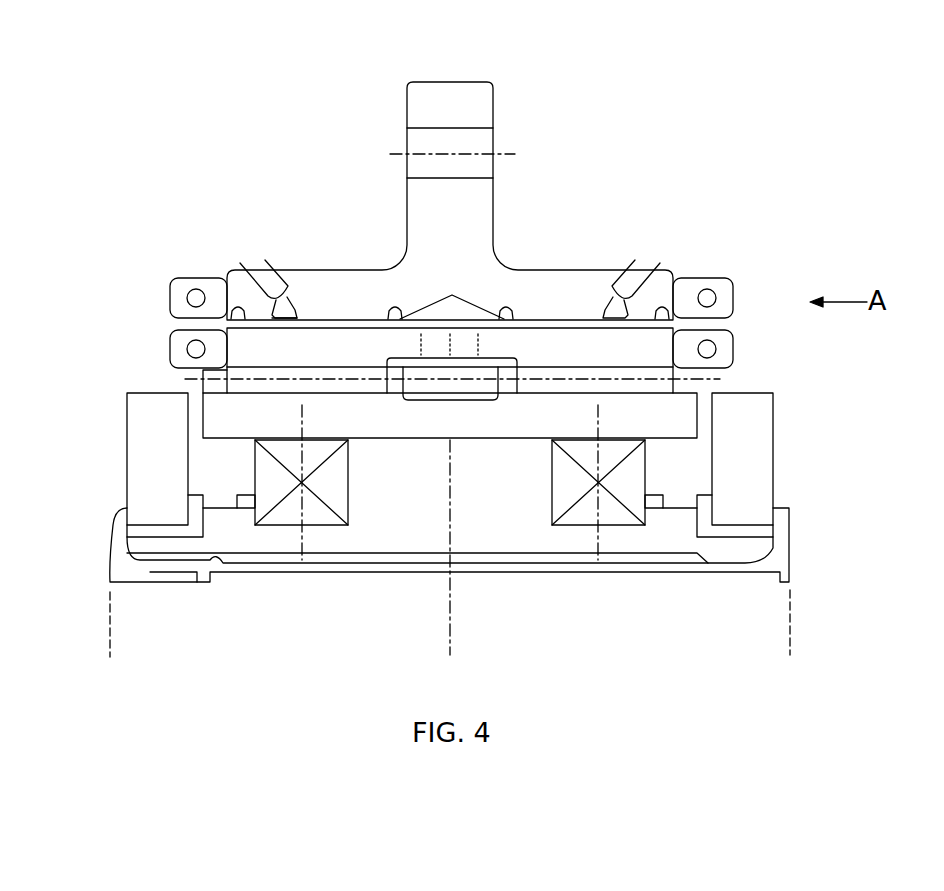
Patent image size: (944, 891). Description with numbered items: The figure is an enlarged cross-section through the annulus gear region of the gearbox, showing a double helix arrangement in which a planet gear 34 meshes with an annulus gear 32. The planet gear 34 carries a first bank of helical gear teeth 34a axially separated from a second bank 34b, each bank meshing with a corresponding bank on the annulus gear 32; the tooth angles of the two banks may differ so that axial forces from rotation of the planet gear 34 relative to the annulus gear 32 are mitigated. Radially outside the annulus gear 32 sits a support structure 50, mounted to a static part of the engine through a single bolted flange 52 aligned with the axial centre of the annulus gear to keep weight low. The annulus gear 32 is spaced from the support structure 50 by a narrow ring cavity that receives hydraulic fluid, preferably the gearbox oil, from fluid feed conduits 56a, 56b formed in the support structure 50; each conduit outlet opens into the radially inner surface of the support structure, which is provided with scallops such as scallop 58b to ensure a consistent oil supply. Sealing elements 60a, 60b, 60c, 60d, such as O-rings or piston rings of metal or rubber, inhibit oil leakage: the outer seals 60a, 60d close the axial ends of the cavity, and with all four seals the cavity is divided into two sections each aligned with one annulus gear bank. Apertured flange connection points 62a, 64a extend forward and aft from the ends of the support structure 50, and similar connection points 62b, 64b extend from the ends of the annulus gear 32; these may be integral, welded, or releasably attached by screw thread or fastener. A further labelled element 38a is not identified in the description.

The annulus gear 32 is at (580, 361).
The planet gear 34 is at (583, 426).
The first bank of helical gear teeth 34a is at (700, 383).
The second bank of helical gear teeth 34b is at (207, 383).
The pin 38a is at (287, 318).
The support structure 50 is at (478, 248).
The bolted flange 52 is at (483, 102).
The fluid feed conduit 56a is at (267, 282).
The fluid feed conduit 56b is at (640, 264).
The scallop 58b is at (758, 387).
The sealing element 60a is at (240, 304).
The sealing element 60b is at (398, 305).
The sealing element 60c is at (512, 305).
The sealing element 60d is at (673, 300).
The connection point 62a is at (735, 295).
The connection point 62b is at (737, 352).
The connection point 64a is at (173, 288).
The connection point 64b is at (172, 352).